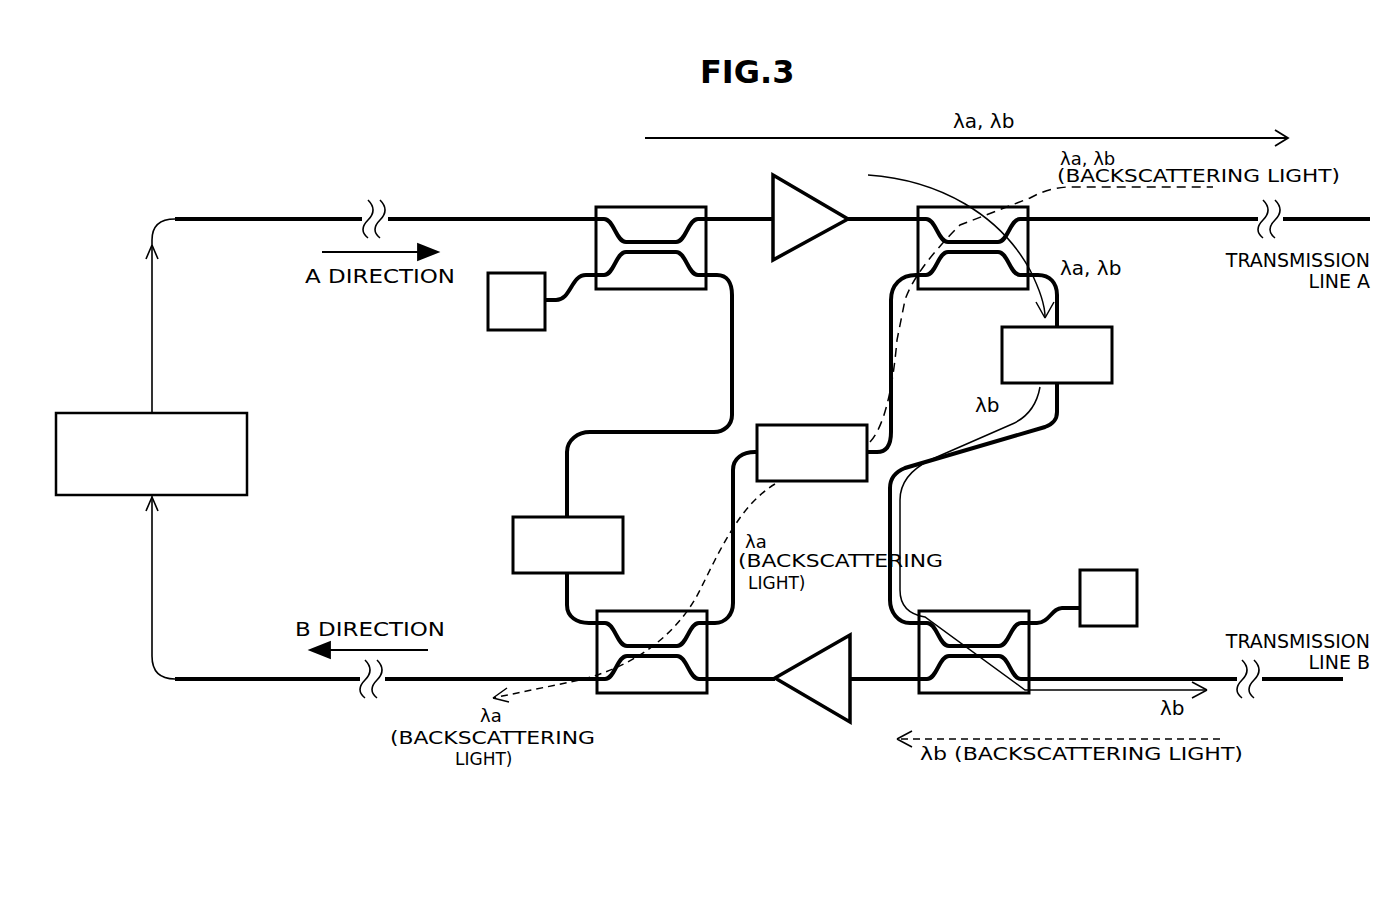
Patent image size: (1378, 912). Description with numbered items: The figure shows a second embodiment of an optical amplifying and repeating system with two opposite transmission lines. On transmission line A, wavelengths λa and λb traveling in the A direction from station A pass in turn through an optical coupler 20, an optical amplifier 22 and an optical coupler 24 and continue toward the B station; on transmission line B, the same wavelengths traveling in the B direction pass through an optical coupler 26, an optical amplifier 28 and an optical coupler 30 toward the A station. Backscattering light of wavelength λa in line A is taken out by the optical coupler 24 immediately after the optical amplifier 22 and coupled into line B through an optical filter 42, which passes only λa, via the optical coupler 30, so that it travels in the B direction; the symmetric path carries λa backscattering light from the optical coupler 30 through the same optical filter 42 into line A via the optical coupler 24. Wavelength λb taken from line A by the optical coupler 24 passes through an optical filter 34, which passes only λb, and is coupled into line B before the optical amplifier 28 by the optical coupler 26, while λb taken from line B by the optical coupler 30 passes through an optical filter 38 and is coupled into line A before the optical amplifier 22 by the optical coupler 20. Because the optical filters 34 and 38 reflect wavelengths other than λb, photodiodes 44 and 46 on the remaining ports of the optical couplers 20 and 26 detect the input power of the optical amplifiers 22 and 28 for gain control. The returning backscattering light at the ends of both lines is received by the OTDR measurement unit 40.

The optical coupler 20 is at (660, 207).
The optical amplifier 22 is at (815, 200).
The optical coupler 24 is at (1030, 244).
The optical coupler 26 is at (965, 611).
The optical amplifier 28 is at (802, 660).
The optical coupler 30 is at (612, 611).
The optical filter 34 is at (1112, 352).
The optical filter 38 is at (623, 535).
The OTDR measurement unit 40 is at (247, 455).
The optical filter 42 is at (810, 425).
The photodiode 44 is at (514, 330).
The photodiode 46 is at (1137, 598).